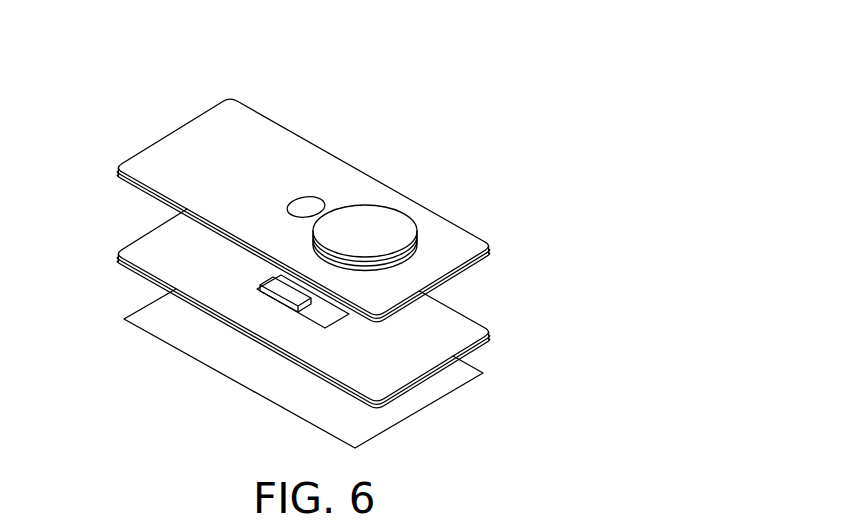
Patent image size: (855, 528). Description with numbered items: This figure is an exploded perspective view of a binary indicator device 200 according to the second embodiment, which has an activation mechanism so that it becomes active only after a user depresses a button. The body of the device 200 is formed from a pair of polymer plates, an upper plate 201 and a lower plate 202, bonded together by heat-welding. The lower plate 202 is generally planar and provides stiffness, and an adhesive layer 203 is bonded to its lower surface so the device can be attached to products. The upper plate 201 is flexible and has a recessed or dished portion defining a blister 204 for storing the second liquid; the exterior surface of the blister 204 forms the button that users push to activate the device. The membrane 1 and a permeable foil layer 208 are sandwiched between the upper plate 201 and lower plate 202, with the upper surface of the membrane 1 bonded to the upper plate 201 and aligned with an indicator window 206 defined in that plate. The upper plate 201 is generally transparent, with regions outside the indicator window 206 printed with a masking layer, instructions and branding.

The binary indicator device 200 is at (487, 95).
The upper plate 201 is at (252, 133).
The lower plate 202 is at (467, 318).
The adhesive layer 203 is at (430, 398).
The blister 204 is at (395, 221).
The indicator window 206 is at (308, 204).
The permeable foil layer 208 is at (296, 304).
The membrane 1 is at (273, 277).